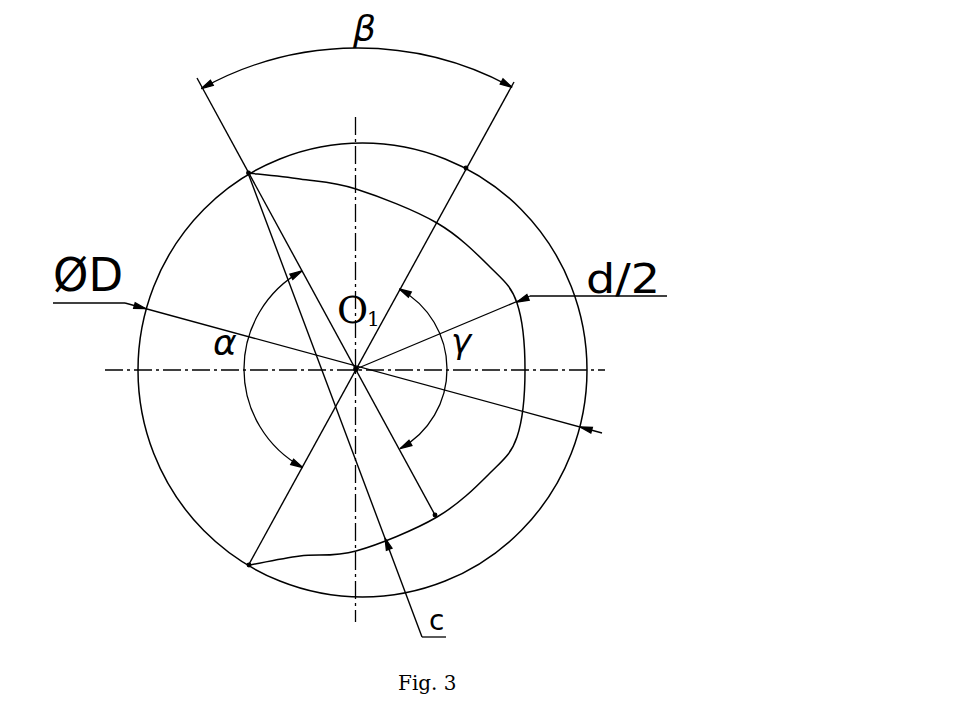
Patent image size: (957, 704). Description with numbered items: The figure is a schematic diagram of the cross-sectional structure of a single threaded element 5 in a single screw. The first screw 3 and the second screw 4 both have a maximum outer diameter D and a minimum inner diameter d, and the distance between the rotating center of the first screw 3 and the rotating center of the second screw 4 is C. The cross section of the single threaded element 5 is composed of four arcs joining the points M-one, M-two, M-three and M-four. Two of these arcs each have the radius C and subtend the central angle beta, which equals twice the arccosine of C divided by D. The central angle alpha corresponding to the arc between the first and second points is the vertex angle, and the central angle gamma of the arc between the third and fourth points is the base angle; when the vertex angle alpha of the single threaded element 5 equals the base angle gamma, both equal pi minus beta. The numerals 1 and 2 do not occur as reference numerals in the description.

The single threaded element 5 is at (470, 285).
The point M1 1 is at (237, 580).
The point M2 2 is at (213, 158).
The first screw 3 is at (478, 200).
The second screw 4 is at (456, 534).